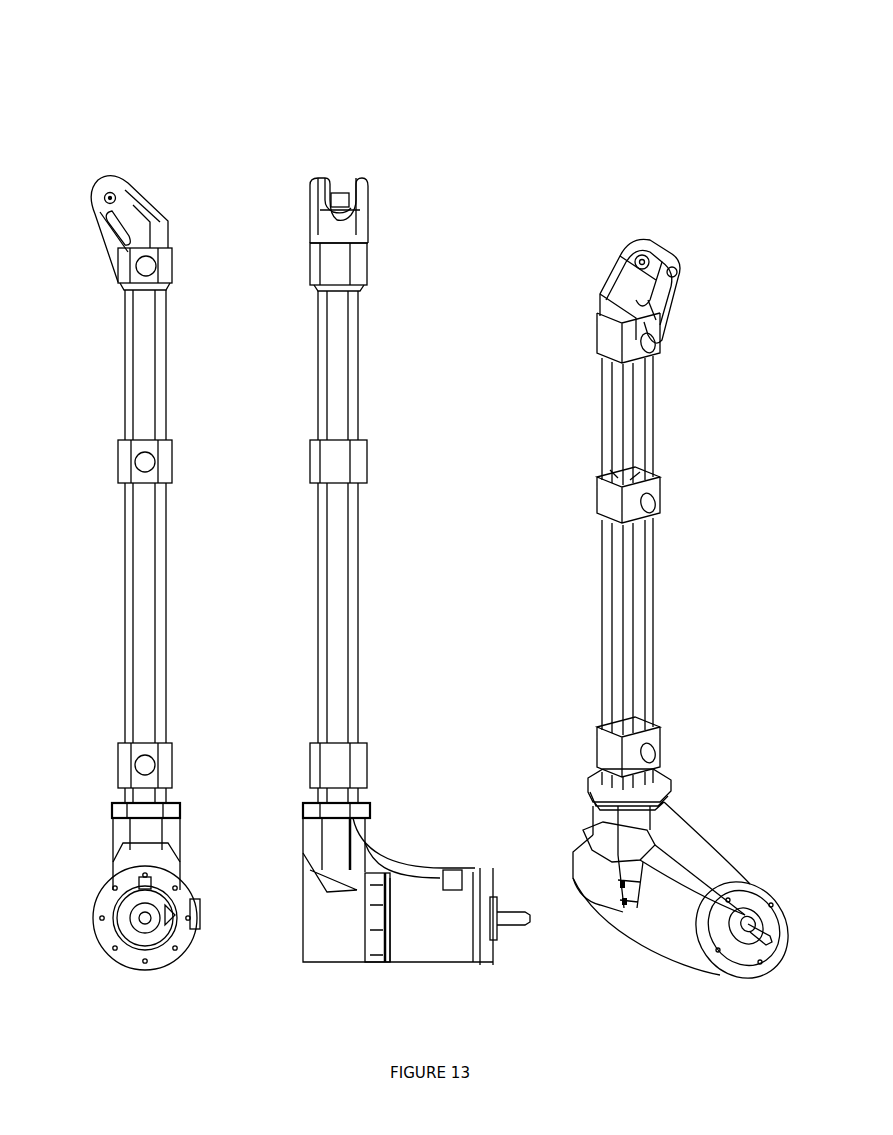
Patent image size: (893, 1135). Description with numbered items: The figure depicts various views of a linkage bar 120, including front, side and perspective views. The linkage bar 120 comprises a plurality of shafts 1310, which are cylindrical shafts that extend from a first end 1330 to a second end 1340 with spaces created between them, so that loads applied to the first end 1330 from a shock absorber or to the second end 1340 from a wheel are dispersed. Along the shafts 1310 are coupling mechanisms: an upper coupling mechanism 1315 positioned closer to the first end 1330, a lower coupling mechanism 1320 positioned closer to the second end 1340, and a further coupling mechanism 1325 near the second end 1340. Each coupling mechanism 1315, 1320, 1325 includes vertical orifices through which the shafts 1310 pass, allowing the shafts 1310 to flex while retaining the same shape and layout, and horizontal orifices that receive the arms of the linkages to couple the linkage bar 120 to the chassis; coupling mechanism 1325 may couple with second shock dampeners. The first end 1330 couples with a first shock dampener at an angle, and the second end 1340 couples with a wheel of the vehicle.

The linkage bar 120 is at (84, 88).
The plurality of shafts 1310 is at (653, 418).
The upper coupling mechanism 1315 is at (615, 347).
The lower coupling mechanism 1320 is at (610, 507).
The coupling mechanism 1325 is at (610, 742).
The first end 1330 is at (622, 265).
The second end 1340 is at (700, 873).